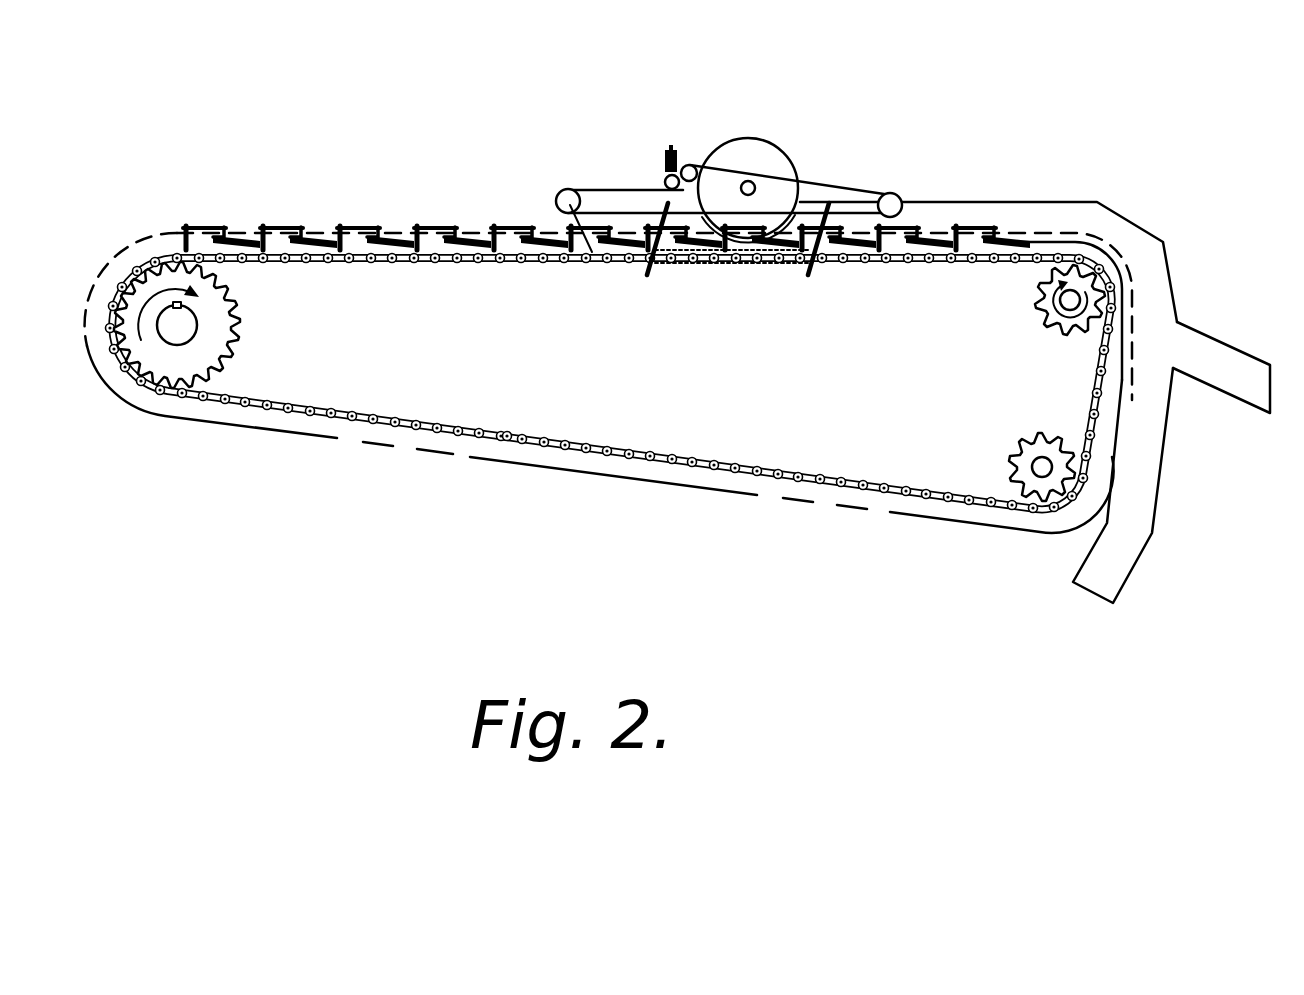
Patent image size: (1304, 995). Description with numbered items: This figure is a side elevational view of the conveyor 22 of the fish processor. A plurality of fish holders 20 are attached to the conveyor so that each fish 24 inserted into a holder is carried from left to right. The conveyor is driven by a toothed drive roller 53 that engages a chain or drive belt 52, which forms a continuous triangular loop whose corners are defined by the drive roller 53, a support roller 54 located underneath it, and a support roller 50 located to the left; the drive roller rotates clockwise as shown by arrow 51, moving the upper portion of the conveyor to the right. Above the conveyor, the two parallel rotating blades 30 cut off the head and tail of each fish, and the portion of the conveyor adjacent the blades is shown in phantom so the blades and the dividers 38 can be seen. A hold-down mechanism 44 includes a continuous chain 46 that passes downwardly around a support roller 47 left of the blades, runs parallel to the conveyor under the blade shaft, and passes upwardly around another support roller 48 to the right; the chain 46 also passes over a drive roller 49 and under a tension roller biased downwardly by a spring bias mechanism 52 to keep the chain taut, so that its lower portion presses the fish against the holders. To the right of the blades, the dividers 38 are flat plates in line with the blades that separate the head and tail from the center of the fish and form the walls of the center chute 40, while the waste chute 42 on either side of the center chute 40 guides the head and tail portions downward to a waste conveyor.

The fish holder 20 is at (508, 218).
The conveyor 22 is at (840, 545).
The fish 24 is at (550, 233).
The rotating blades 30 is at (766, 148).
The divider 38 is at (1023, 217).
The center chute 40 is at (1227, 363).
The waste chute 42 is at (1158, 470).
The hold-down mechanism 44 is at (593, 158).
The chain 46 is at (837, 183).
The support roller 47 is at (606, 263).
The support roller 48 is at (894, 191).
The drive roller 49 is at (690, 165).
The support roller 50 is at (155, 363).
The arrow 51 is at (1038, 297).
The drive belt 52 is at (670, 148).
The drive roller 53 is at (1038, 313).
The support roller 54 is at (1022, 450).